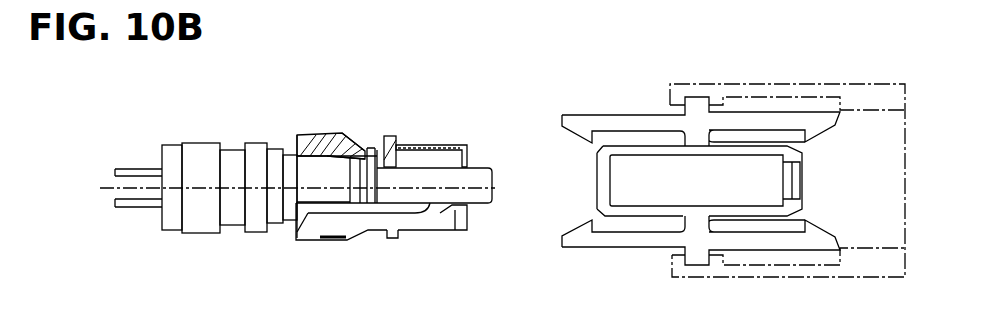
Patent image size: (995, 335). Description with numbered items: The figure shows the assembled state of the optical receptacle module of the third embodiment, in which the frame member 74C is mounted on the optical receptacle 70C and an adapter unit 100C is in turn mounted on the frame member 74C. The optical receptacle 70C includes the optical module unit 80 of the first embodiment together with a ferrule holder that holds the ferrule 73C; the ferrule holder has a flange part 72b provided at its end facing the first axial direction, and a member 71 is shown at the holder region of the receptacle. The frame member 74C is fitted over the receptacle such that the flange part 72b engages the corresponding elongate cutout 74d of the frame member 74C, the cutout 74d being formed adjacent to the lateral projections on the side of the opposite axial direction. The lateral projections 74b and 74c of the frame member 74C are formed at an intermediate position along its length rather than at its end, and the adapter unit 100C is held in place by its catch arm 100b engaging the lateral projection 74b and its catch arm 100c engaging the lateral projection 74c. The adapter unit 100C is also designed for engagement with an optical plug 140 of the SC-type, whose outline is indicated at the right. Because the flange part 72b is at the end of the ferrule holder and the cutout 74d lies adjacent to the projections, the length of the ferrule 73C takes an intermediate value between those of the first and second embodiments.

The optical module unit 80 is at (198, 130).
The optical receptacle 70C is at (377, 65).
The housing 71 is at (290, 150).
The elongate cutout 74d is at (372, 152).
The flange part 72b is at (373, 150).
The lateral projection 74b is at (398, 138).
The frame member 74C is at (438, 147).
The ferrule 73C is at (480, 167).
The lateral projection 74c is at (395, 240).
The adapter unit 100C is at (672, 62).
The catch arm 100b is at (590, 114).
The catch arm 100c is at (585, 248).
The optical plug 140 is at (806, 82).